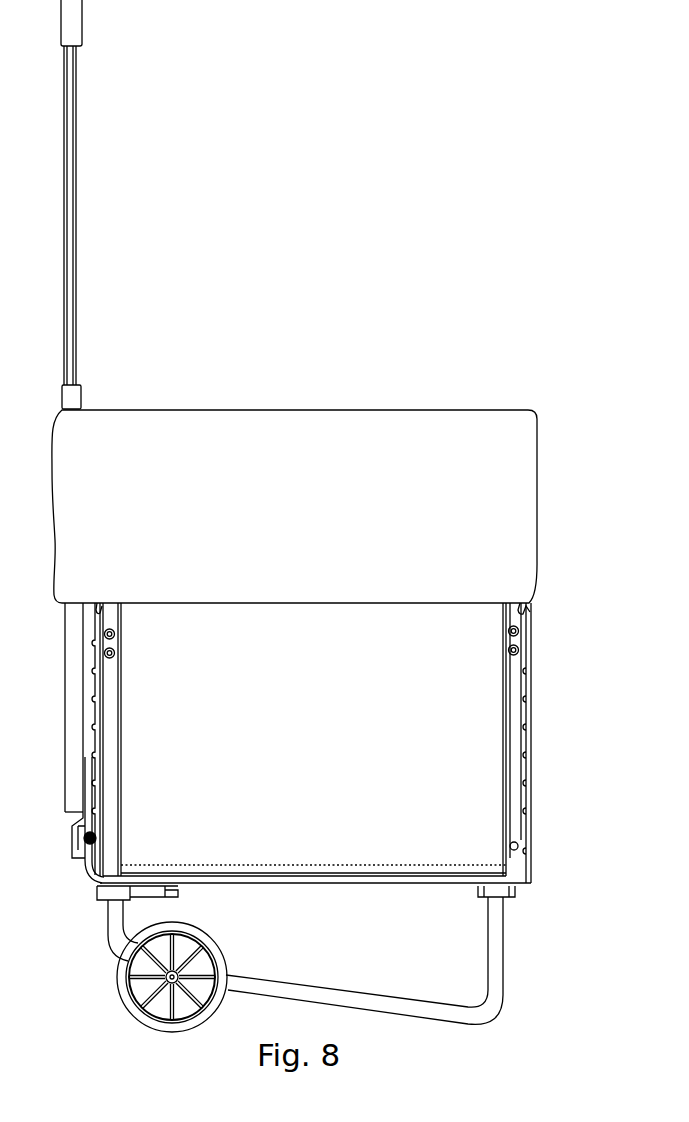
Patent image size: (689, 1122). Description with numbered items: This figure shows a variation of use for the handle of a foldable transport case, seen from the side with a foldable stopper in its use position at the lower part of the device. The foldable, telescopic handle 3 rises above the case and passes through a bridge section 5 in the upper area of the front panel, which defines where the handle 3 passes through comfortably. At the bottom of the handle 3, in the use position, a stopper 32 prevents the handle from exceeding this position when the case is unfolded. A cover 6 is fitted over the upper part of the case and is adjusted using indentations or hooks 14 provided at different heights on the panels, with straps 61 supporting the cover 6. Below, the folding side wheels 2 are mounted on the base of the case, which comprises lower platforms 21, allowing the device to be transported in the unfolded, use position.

The folding side wheels 2 is at (122, 986).
The foldable, telescopic handle 3 is at (78, 684).
The bridge section 5 is at (85, 843).
The cover 6 is at (465, 513).
The indentations or hooks 14 is at (528, 699).
The lower platforms 21 is at (495, 985).
The stopper 32 is at (80, 840).
The straps 61 is at (533, 604).